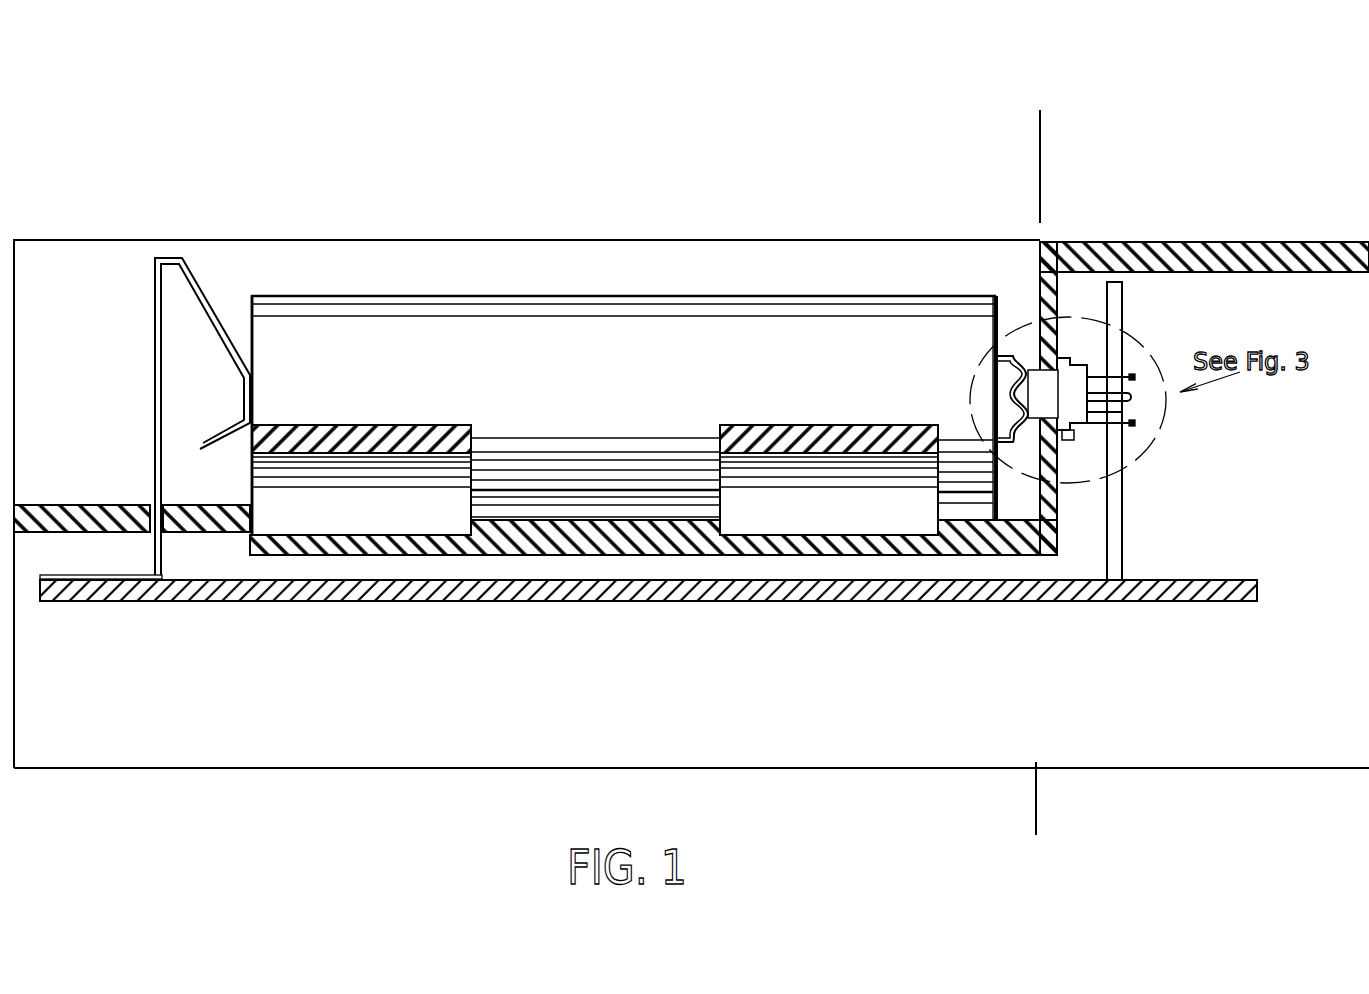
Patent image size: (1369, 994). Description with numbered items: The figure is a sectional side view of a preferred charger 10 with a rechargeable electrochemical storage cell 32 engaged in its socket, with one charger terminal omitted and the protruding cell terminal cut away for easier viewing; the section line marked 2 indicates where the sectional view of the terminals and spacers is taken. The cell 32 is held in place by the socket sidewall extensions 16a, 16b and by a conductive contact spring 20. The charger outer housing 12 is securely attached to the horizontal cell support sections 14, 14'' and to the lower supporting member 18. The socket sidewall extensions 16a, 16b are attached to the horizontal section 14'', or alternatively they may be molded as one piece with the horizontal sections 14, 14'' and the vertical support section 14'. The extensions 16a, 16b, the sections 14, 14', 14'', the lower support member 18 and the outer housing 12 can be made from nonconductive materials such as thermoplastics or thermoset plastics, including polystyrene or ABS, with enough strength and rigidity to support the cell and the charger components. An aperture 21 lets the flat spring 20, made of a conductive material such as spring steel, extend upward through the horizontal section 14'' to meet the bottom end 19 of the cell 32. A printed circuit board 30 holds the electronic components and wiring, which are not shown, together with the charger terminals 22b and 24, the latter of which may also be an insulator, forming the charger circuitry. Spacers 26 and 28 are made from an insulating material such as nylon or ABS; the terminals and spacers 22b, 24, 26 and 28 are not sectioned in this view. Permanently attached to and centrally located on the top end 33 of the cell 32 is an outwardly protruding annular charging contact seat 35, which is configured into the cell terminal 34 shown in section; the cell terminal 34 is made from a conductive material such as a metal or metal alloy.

The charger 10 is at (1230, 178).
The charger outer housing 12 is at (1368, 470).
The horizontal cell support section 14 is at (1204, 231).
The vertical support section 14' is at (1103, 372).
The horizontal cell support section 14'' is at (535, 549).
The socket sidewall extension 16a is at (333, 512).
The socket sidewall extension 16b is at (812, 510).
The lower supporting member 18 is at (497, 587).
The bottom end of cell 19 is at (253, 296).
The conductive contact spring 20 is at (155, 308).
The aperture 21 is at (148, 507).
The charger terminal 22b is at (1035, 373).
The charger terminal 24 is at (1097, 400).
The spacer 26 is at (1075, 392).
The spacer 28 is at (1066, 438).
The printed circuit board 30 is at (1122, 532).
The rechargeable electrochemical cell 32 is at (461, 294).
The top end of cell 33 is at (996, 297).
The cell terminal 34 is at (998, 357).
The annular charging contact seat 35 is at (1027, 417).
The section line 2- 2 is at (1042, 127).